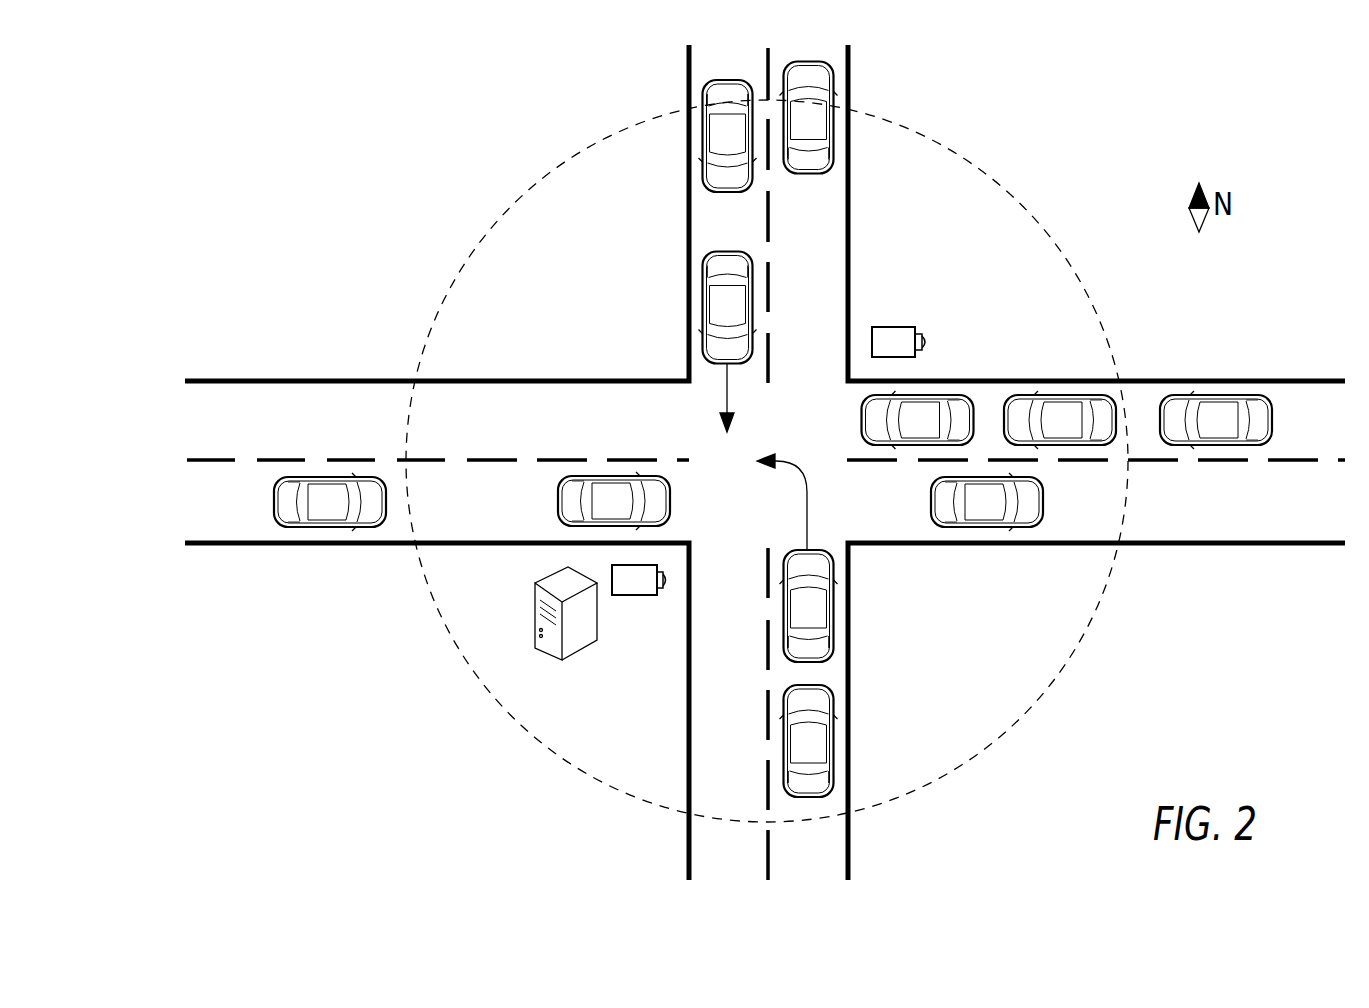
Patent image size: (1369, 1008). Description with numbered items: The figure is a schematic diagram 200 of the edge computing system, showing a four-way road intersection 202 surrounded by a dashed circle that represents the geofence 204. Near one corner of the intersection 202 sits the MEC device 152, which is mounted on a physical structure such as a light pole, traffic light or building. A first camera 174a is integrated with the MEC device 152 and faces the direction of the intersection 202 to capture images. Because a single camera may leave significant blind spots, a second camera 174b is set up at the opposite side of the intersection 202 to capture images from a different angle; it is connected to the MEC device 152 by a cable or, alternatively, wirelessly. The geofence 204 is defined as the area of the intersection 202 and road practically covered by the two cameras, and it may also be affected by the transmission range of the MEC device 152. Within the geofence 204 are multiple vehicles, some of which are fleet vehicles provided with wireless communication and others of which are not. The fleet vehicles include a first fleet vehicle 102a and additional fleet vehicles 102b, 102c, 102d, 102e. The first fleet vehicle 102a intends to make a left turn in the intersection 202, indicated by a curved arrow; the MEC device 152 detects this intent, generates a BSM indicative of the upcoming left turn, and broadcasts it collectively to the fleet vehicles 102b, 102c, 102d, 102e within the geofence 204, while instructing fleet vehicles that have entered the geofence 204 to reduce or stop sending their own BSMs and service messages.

The traffic environment 200 is at (1212, 761).
The intersection 202 is at (809, 436).
The geofence 204 is at (495, 222).
The first fleet vehicle 102a is at (833, 612).
The fleet vehicle 102b is at (703, 297).
The fleet vehicle 102c is at (703, 168).
The fleet vehicle 102d is at (833, 713).
The fleet vehicle 102e is at (592, 477).
The MEC device 152 is at (535, 600).
The first camera 174a is at (627, 597).
The second camera 174b is at (900, 325).